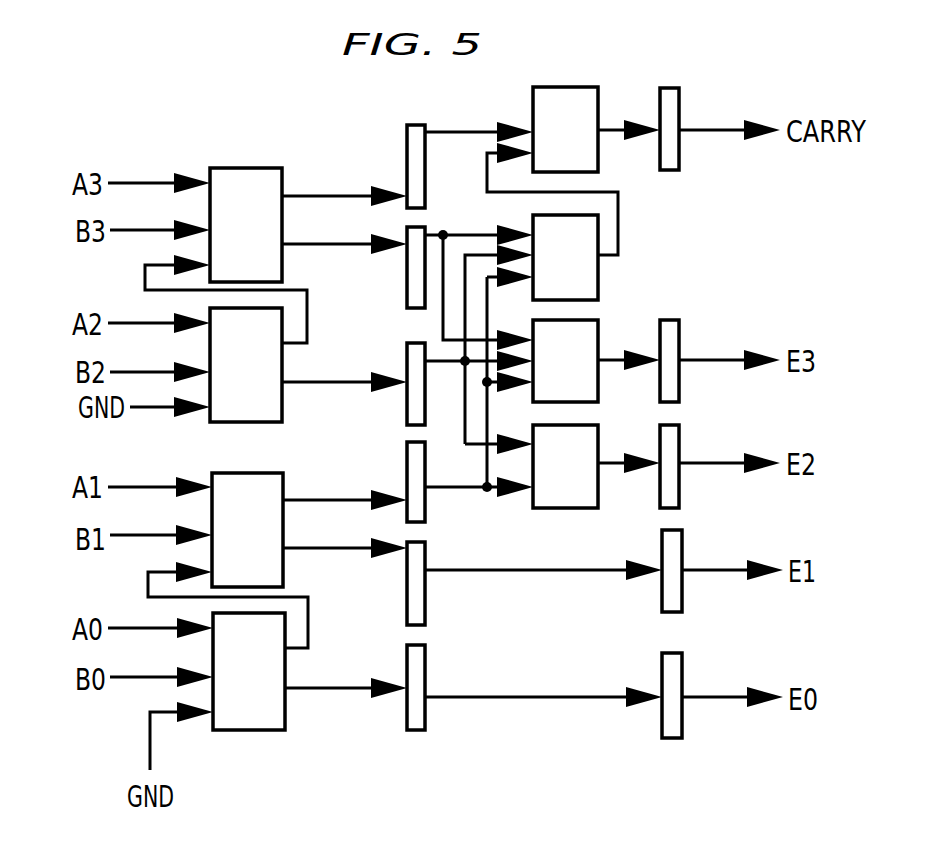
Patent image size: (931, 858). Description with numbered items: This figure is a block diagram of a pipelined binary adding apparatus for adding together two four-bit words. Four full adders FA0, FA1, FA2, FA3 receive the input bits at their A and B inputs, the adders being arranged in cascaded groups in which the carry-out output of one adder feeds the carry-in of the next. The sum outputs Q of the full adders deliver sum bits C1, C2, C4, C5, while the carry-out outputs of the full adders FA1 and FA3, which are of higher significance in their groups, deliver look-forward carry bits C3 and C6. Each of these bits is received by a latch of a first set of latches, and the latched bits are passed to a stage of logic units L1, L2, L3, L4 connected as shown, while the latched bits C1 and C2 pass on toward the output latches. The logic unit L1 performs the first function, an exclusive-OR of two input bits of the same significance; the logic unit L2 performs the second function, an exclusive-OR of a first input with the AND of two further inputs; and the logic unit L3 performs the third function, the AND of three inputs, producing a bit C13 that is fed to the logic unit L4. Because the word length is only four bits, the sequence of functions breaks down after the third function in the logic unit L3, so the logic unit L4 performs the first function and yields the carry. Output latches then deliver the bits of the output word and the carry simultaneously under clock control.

The full adder FA3 is at (242, 174).
The full adder FA2 is at (252, 415).
The full adder FA1 is at (242, 483).
The full adder FA0 is at (256, 717).
The carry-out bit C6 is at (344, 179).
The sum bit C5 is at (344, 264).
The sum bit C4 is at (344, 365).
The carry-out bit C3 is at (345, 484).
The sum bit C2 is at (345, 569).
The sum bit C1 is at (346, 672).
The output bit of logic unit C13 is at (530, 199).
The logic unit L4 is at (565, 129).
The logic unit L3 is at (565, 257).
The logic unit L2 is at (565, 361).
The logic unit L1 is at (565, 466).